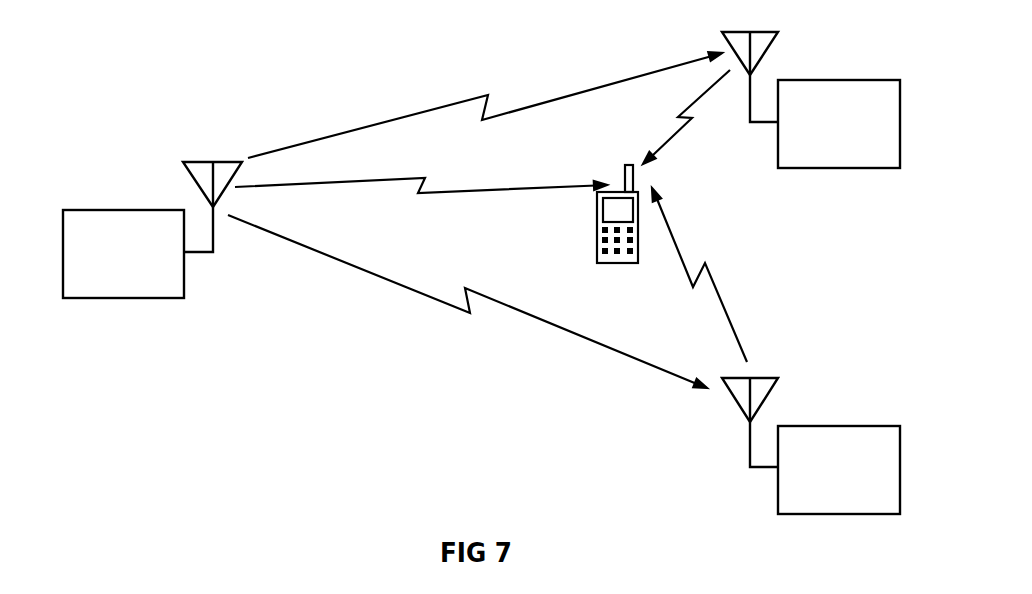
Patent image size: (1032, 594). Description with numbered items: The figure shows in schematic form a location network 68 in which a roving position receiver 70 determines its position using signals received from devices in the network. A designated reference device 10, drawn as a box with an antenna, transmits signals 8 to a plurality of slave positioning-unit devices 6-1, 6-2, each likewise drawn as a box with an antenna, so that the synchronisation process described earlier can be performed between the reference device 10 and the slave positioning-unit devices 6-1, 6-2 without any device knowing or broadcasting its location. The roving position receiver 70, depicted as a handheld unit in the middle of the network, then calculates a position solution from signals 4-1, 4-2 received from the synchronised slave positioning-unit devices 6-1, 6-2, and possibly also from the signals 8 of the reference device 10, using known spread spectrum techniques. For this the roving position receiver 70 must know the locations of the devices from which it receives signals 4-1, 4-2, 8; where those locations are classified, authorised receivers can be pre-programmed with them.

The location network 68 is at (246, 112).
The reference device 10 is at (125, 298).
The signals 8 is at (348, 130).
The roving position receiver 70 is at (597, 223).
The signal 4-1 is at (660, 150).
The signal 4-2 is at (720, 285).
The slave positioning-unit device 6-1 is at (865, 168).
The slave positioning-unit device 6-2 is at (867, 426).